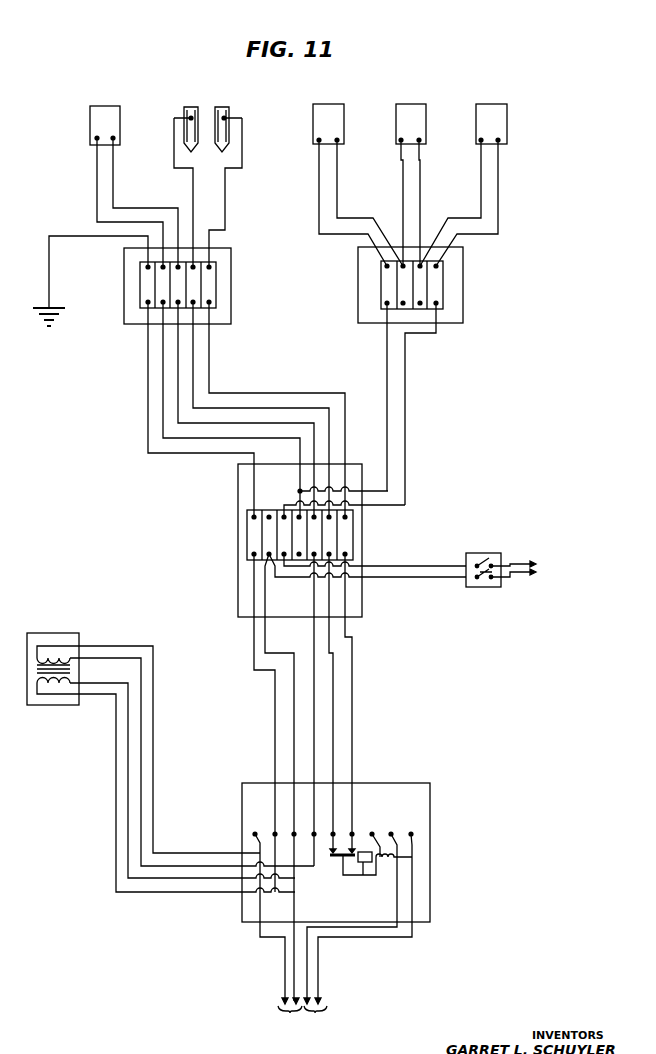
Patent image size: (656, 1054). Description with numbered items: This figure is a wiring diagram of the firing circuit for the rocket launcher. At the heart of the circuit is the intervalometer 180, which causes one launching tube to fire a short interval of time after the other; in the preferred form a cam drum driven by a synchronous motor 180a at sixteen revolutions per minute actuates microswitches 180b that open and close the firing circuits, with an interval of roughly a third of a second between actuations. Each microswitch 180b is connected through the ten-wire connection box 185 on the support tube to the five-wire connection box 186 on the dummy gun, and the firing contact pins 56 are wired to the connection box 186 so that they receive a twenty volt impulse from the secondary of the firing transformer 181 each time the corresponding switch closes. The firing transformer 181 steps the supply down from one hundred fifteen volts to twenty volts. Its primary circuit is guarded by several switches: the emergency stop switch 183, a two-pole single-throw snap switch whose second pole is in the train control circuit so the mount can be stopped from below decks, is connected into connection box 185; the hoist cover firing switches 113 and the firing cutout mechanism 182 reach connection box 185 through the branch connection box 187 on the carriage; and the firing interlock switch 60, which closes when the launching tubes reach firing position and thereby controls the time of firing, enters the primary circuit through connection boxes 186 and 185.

The firing interlock switch 60 is at (99, 112).
The firing contact pins 56 is at (222, 112).
The firing cutout mechanism 182 is at (326, 114).
The firing switches 113 is at (485, 116).
The five-wire connection box 186 is at (227, 297).
The branch connection box 187 is at (451, 293).
The ten-wire connection box 185 is at (247, 540).
The emergency stop switch 183 is at (493, 561).
The firing transformer 181 is at (52, 632).
The intervalometer 180 is at (413, 797).
The synchronous motor 180a is at (365, 863).
The microswitches 180b is at (335, 858).